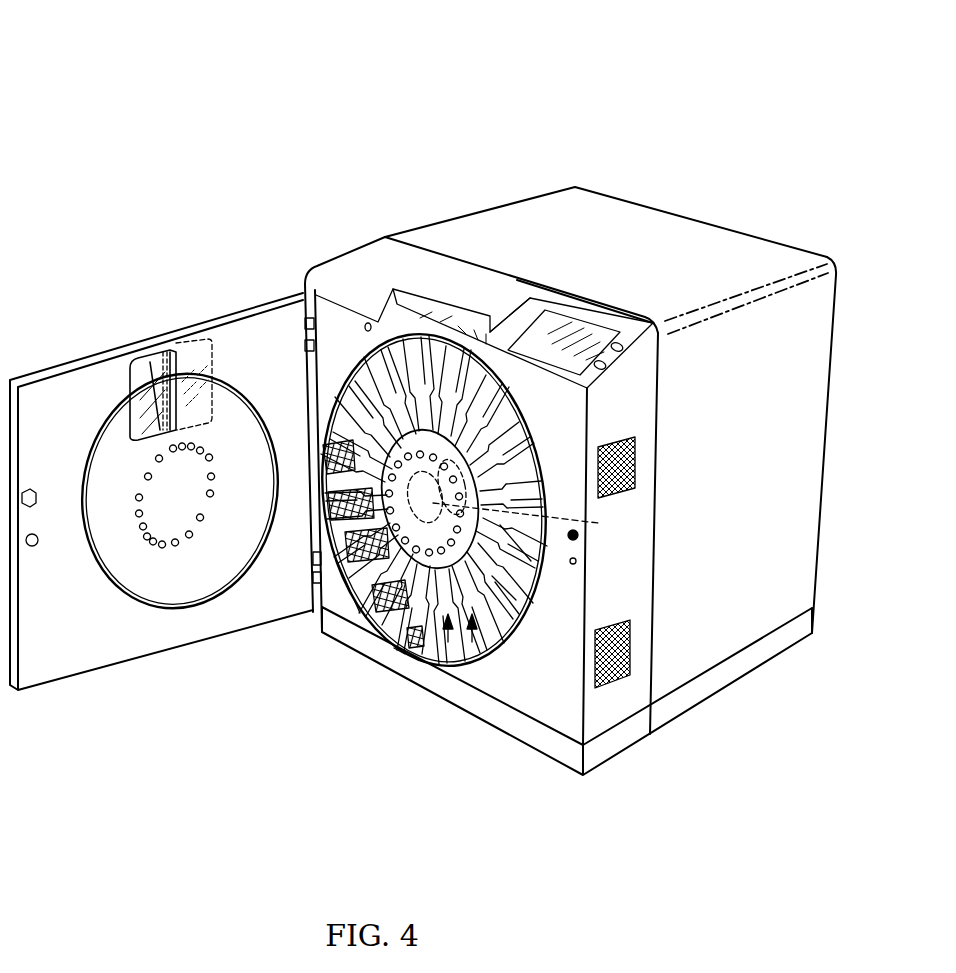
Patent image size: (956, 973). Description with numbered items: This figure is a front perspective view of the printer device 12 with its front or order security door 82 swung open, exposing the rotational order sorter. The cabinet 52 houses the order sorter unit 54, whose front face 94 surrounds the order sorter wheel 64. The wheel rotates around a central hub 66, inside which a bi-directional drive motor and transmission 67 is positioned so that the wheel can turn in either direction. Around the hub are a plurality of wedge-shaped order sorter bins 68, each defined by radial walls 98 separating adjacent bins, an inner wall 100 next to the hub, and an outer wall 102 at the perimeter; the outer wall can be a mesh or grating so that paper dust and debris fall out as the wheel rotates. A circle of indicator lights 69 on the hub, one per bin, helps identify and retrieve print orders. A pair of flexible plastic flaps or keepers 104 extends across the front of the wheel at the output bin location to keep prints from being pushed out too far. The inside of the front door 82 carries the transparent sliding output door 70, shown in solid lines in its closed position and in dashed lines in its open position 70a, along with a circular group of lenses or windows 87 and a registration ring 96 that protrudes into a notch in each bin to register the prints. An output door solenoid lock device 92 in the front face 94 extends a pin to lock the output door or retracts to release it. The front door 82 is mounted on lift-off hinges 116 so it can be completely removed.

The printer device 12 is at (235, 92).
The cabinet 52 is at (640, 240).
The order sorter unit 54 is at (632, 412).
The order sorter wheel 64 is at (366, 322).
The central hub 66 is at (340, 403).
The drive motor and transmission 67 is at (590, 523).
The order sorter bins 68 is at (473, 644).
The indicator lights 69 is at (403, 605).
The output door 70 is at (150, 360).
The open position of output door 70a is at (193, 343).
The front door 82 is at (52, 390).
The lenses or windows 87 is at (214, 493).
The output door solenoid lock device 92 is at (352, 352).
The front face 94 is at (537, 690).
The registration ring 96 is at (118, 600).
The radial walls 98 is at (447, 393).
The inner wall 100 is at (500, 463).
The outer wall 102 is at (360, 605).
The flexible plastic flaps or keepers 104 is at (535, 540).
The lift-off hinges 116 is at (305, 343).